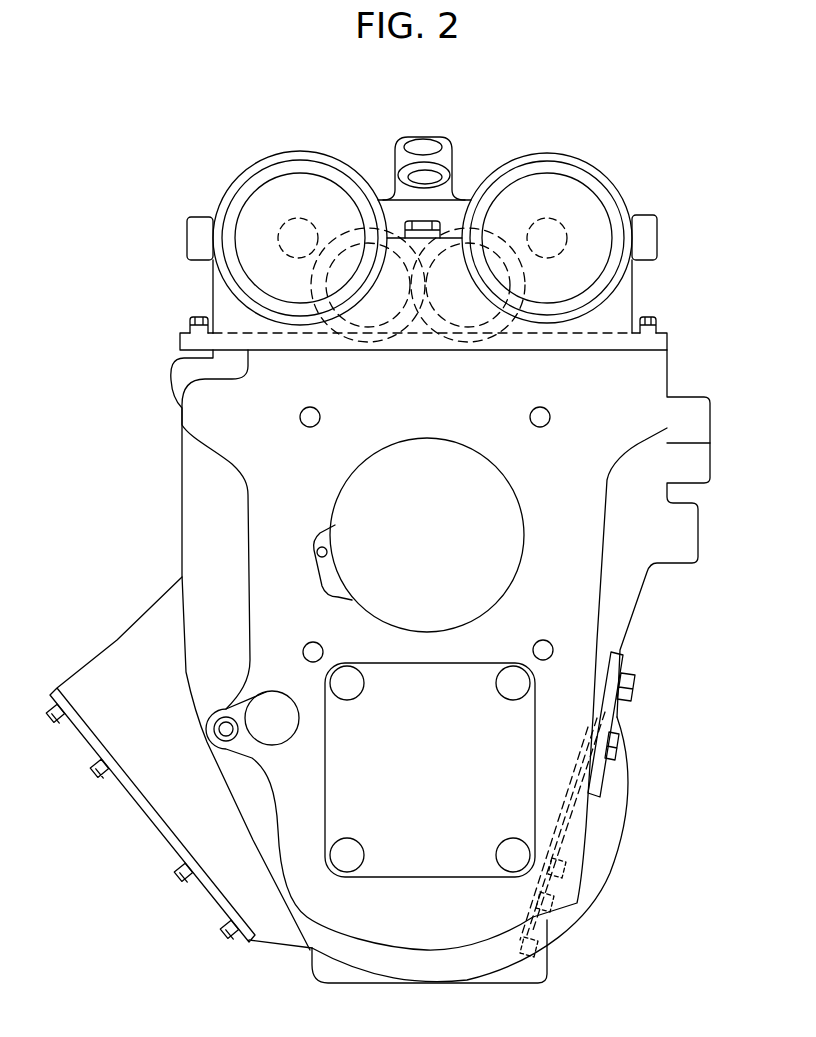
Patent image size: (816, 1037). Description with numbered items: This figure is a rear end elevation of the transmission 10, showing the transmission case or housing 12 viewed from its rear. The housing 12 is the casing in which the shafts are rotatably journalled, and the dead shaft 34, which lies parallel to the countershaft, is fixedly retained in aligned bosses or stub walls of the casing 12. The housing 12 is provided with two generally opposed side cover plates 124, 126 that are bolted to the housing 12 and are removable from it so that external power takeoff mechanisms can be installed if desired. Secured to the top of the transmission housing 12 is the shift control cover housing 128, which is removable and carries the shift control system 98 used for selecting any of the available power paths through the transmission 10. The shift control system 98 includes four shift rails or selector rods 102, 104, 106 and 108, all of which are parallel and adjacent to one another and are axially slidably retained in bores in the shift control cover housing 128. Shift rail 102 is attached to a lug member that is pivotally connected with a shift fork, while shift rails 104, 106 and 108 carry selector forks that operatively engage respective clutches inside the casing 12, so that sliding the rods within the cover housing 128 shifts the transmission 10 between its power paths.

The transmission 10 is at (612, 937).
The casing or housing 12 is at (180, 497).
The dead shaft 34 is at (262, 700).
The shift control system 98 is at (492, 143).
The shift rail or selector rod 102 is at (466, 333).
The shift rail or selector rod 104 is at (372, 333).
The shift rail or selector rod 106 is at (552, 227).
The shift rail or selector rod 108 is at (290, 228).
The side cover plate 124 is at (147, 820).
The side cover plate 126 is at (627, 668).
The shift control cover housing 128 is at (624, 305).